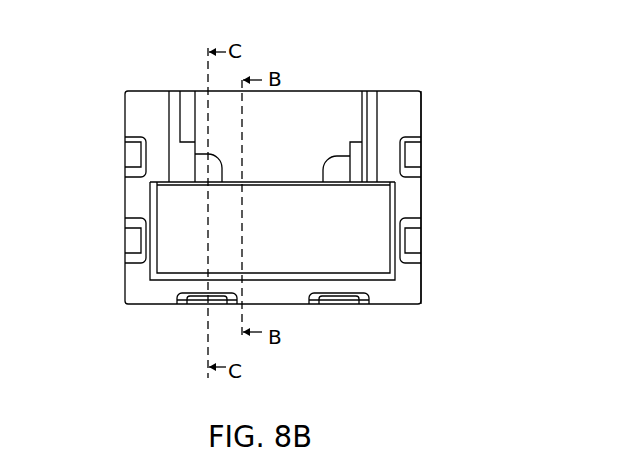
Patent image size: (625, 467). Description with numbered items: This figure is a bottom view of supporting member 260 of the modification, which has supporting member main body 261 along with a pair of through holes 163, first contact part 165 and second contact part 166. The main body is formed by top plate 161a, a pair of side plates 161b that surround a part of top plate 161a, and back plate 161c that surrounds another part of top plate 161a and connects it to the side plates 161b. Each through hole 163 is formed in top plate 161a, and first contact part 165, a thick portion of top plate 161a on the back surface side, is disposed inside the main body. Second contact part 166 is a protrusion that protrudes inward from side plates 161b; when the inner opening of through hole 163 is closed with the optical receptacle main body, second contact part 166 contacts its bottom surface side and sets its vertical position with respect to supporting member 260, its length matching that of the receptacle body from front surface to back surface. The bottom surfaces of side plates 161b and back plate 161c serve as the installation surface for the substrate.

The supporting member 260 is at (527, 73).
The supporting member main body 261 is at (420, 283).
The top plate 161a is at (319, 255).
The side plates 161b is at (410, 192).
The back plate 161c is at (378, 290).
The through hole 163 is at (201, 177).
The first contact part 165 is at (290, 182).
The second contact part 166 is at (185, 163).